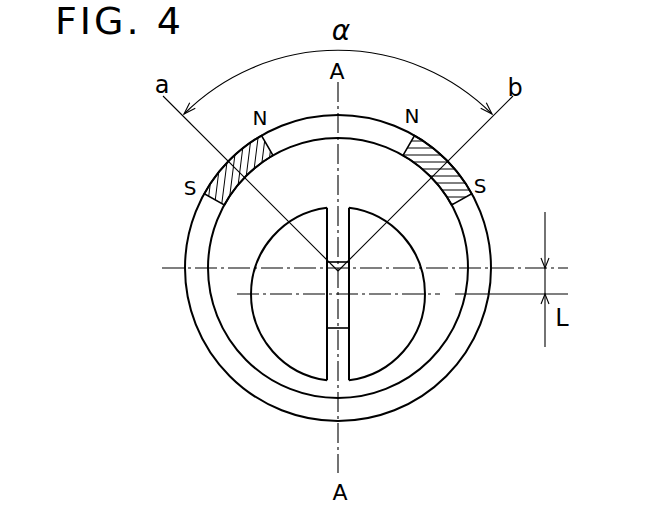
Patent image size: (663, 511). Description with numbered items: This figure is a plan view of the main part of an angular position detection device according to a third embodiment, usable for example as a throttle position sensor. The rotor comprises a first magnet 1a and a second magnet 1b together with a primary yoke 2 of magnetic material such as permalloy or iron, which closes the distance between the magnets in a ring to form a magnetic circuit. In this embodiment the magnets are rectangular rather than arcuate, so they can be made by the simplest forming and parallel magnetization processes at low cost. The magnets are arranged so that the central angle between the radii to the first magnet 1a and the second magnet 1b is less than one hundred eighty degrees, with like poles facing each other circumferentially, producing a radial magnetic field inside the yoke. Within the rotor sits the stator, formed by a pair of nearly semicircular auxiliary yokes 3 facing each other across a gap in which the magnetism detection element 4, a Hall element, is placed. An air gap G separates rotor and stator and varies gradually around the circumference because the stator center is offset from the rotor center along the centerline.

The first magnet 1a is at (228, 172).
The second magnet 1b is at (455, 175).
The primary yoke 2 is at (483, 223).
The auxiliary yokes 3 is at (360, 365).
The magnetism detection element 4 is at (345, 315).
The air gap G is at (375, 163).